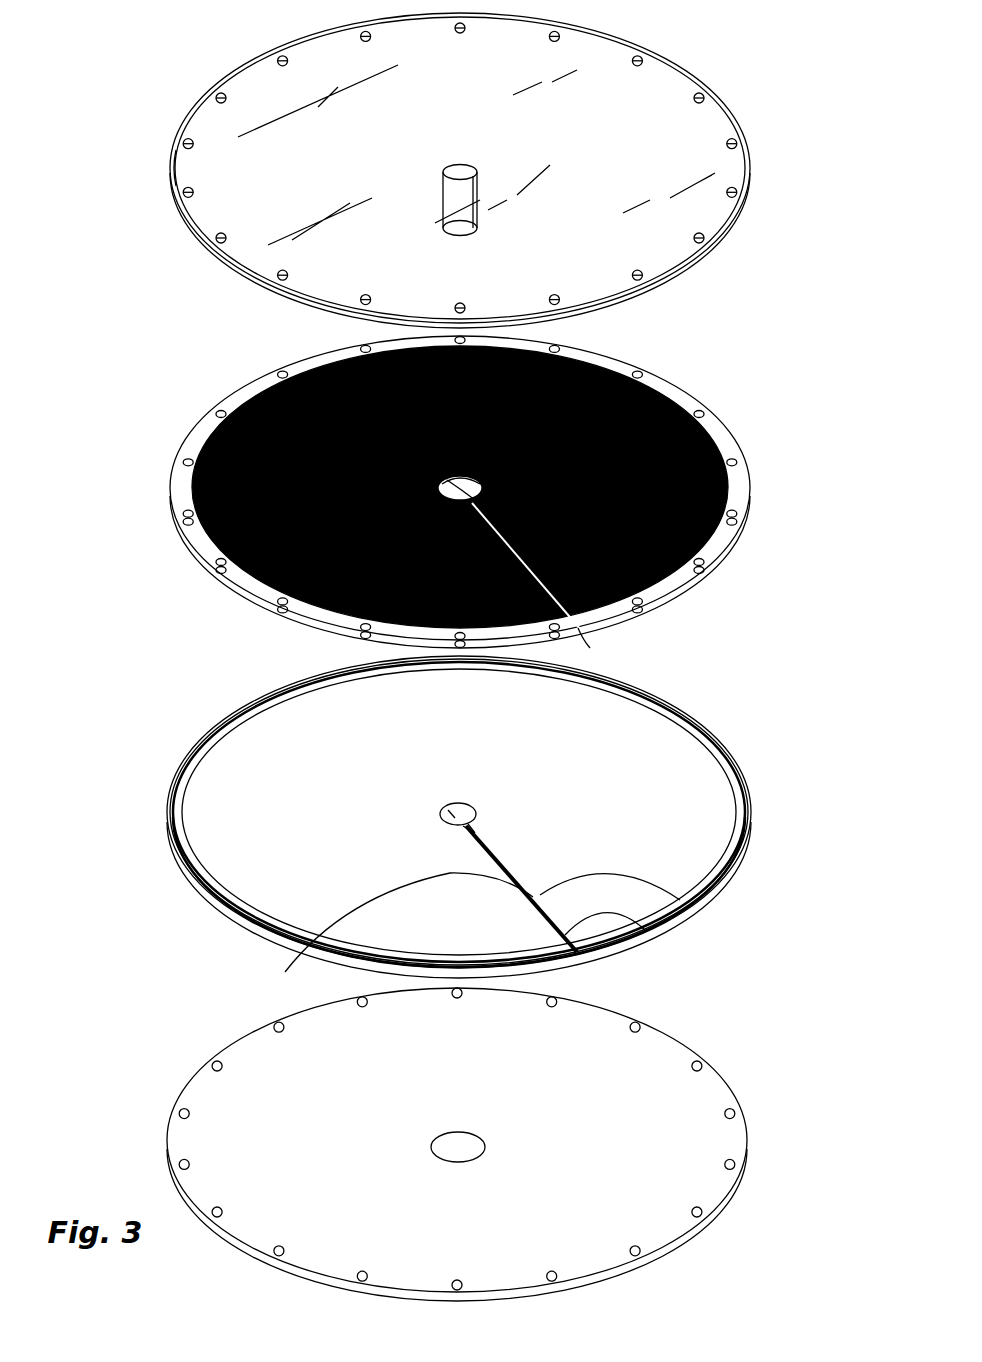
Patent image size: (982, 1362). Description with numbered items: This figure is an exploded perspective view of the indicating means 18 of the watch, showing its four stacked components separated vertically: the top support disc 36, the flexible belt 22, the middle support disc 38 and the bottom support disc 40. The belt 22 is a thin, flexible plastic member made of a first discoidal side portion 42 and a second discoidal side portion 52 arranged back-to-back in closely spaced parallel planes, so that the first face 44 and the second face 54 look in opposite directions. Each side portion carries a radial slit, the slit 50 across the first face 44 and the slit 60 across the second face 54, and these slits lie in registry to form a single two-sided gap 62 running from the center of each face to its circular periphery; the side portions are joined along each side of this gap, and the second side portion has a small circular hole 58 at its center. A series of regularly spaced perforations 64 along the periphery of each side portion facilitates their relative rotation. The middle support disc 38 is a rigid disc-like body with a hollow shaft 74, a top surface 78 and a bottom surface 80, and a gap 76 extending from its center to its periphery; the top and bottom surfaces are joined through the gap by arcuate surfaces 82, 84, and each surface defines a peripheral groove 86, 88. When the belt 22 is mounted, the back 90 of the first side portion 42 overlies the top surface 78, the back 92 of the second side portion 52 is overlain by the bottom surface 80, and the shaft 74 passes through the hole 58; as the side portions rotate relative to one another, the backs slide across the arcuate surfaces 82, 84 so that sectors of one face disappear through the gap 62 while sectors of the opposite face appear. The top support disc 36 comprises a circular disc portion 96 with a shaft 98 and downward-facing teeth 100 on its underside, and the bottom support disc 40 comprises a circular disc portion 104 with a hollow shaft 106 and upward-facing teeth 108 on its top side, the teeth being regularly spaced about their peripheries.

The indicating means 18 is at (168, 88).
The flexible belt 22 is at (697, 398).
The top support disc 36 is at (722, 126).
The middle support disc 38 is at (640, 742).
The bottom support disc 40 is at (673, 1052).
The first discoidal side portion 42 is at (730, 487).
The first face 44 is at (713, 437).
The slit 50 is at (653, 592).
The second discoidal side portion 52 is at (197, 565).
The second face 54 is at (207, 574).
The small circular hole 58 is at (378, 344).
The slit 60 is at (583, 638).
The two-sided gap 62 is at (700, 560).
The holes or perforations 64 is at (184, 512).
The hollow shaft 74 is at (452, 812).
The gap 76 is at (622, 908).
The top surface 78 is at (693, 765).
The bottom surface 80 is at (710, 898).
The arcuate surface 82 is at (400, 937).
The arcuate surface 84 is at (683, 903).
The groove 86 is at (193, 878).
The groove 88 is at (247, 930).
The back 90 is at (250, 600).
The back 92 is at (300, 622).
The circular disc portion 96 is at (603, 48).
The shaft 98 is at (458, 165).
The teeth 100 is at (182, 192).
The circular disc portion 104 is at (690, 1102).
The hollow shaft 106 is at (450, 1146).
The teeth 108 is at (730, 1158).